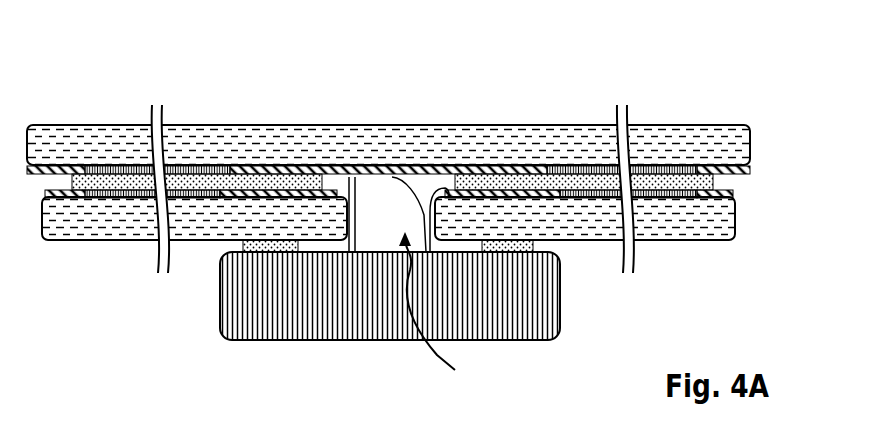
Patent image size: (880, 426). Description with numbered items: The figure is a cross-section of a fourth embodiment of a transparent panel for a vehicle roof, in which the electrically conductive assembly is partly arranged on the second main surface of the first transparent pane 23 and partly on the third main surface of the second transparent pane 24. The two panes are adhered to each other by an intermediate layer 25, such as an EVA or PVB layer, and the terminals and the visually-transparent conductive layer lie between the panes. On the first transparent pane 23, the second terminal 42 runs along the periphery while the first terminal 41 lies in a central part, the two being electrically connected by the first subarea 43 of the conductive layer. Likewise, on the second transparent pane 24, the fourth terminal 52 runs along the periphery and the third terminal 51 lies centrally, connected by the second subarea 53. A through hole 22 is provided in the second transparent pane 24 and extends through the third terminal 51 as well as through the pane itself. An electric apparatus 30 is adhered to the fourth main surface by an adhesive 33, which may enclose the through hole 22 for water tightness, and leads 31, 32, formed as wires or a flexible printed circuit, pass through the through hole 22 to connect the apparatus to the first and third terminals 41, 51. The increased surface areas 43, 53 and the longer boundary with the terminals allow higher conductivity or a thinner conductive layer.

The through hole 22 is at (438, 309).
The first transparent pane 23 is at (388, 99).
The second transparent pane 24 is at (388, 199).
The intermediate layer 25 is at (577, 182).
The electric apparatus 30 is at (336, 323).
The lead 31 is at (353, 218).
The lead 32 is at (392, 177).
The adhesive 33 is at (247, 245).
The first terminal 41 is at (388, 120).
The second terminal 42 is at (70, 167).
The first subarea of the visually-transparent conductive layer 43 is at (206, 170).
The third terminal 51 is at (247, 190).
The fourth terminal 52 is at (65, 201).
The second subarea of the visually-transparent conductive layer 53 is at (648, 193).